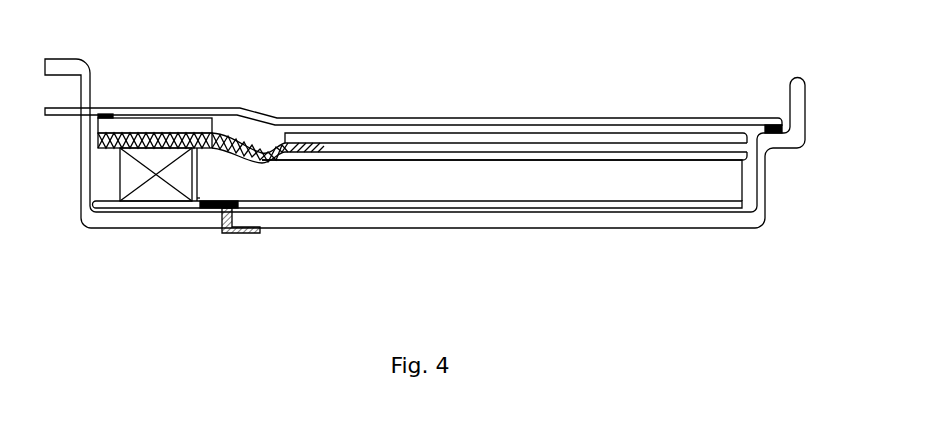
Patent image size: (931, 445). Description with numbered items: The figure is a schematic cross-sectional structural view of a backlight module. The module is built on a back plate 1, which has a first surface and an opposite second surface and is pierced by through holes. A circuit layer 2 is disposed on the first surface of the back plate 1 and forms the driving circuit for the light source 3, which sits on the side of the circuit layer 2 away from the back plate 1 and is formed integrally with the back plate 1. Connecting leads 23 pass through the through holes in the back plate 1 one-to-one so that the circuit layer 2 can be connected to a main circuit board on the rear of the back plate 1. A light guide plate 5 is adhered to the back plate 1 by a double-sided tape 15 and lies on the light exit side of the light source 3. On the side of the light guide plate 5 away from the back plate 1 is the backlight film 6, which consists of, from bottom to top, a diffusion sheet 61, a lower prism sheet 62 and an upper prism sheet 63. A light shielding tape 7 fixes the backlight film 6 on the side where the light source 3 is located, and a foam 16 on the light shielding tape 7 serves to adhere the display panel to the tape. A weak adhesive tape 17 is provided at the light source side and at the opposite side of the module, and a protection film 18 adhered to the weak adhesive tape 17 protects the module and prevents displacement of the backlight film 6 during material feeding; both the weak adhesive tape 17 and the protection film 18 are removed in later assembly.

The back plate 1 is at (318, 222).
The circuit layer 2 is at (147, 208).
The light source 3 is at (165, 198).
The light guide plate 5 is at (367, 193).
The backlight film 6 is at (479, 225).
The light shielding tape 7 is at (113, 140).
The double-sided tape 15 is at (213, 208).
The foam 16 is at (168, 127).
The weak adhesive tape 17 is at (108, 116).
The protection film 18 is at (452, 118).
The connecting leads 23 is at (241, 230).
The diffusion sheet 61 is at (450, 157).
The lower prism sheet 62 is at (507, 147).
The upper prism sheet 63 is at (563, 137).